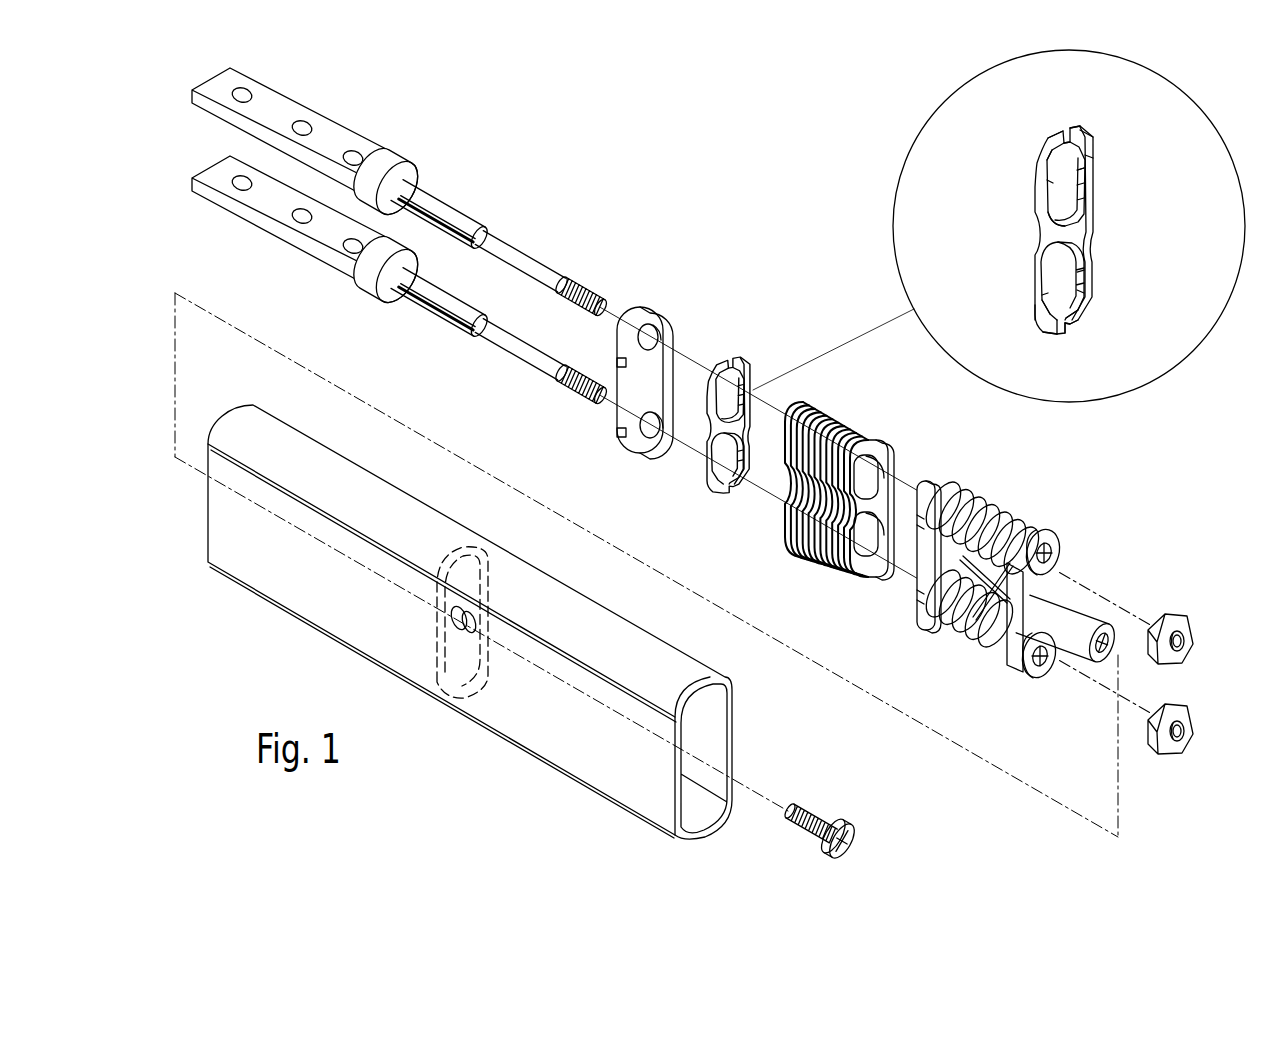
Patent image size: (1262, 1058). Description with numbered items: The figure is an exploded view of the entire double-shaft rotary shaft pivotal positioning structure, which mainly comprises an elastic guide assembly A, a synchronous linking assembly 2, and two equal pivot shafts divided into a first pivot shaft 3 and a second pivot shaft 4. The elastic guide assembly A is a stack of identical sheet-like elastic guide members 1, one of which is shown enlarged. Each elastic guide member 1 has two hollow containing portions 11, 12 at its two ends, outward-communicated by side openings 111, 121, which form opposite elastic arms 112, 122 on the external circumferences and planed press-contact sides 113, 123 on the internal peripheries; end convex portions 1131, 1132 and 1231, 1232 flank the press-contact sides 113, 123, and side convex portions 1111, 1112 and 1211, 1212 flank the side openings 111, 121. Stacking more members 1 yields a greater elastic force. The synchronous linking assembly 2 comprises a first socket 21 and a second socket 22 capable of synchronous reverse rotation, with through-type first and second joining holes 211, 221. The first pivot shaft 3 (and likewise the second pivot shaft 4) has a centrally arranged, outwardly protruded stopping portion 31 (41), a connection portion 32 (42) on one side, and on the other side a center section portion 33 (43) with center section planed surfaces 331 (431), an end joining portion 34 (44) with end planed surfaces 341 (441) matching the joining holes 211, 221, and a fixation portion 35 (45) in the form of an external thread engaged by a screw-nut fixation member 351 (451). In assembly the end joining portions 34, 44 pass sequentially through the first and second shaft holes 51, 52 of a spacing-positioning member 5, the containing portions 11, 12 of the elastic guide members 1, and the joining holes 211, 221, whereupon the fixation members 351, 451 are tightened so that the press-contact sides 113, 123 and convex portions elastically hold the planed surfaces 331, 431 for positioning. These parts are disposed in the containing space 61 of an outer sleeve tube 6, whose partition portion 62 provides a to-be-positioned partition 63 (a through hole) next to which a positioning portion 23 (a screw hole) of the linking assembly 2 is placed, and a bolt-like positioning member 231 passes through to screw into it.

The elastic guide member 1 is at (757, 352).
The containing portion 11 is at (1042, 168).
The side opening 111 is at (1065, 130).
The side convex portion 1111 is at (1055, 140).
The side convex portion 1112 is at (1083, 133).
The elastic arm 112 is at (1092, 157).
The press-contact side 113 is at (1055, 220).
The end convex portion 1131 is at (1092, 137).
The end convex portion 1132 is at (1078, 168).
The containing portion 12 is at (1060, 285).
The side opening 121 is at (1062, 333).
The side convex portion 1211 is at (1052, 337).
The side convex portion 1212 is at (1084, 316).
The elastic arm 122 is at (1036, 313).
The press-contact side 123 is at (1072, 322).
The end convex portion 1231 is at (1086, 303).
The end convex portion 1232 is at (1092, 277).
The synchronous linking assembly 2 is at (999, 492).
The first socket 21 is at (1040, 530).
The first joining hole 211 is at (1052, 555).
The second socket 22 is at (1028, 672).
The second joining hole 221 is at (1048, 672).
The positioning portion 23 is at (1114, 640).
The positioning member 231 is at (818, 813).
The first pivot shaft 3 is at (427, 173).
The stopping portion 31 is at (387, 162).
The connection portion 32 is at (333, 141).
The center section portion 33 is at (458, 220).
The center section planed surface 331 is at (433, 228).
The end joining portion 34 is at (535, 284).
The end planed surface 341 is at (530, 260).
The fixation portion 35 is at (584, 286).
The fixation member 351 is at (1185, 617).
The second pivot shaft 4 is at (371, 308).
The stopping portion 41 is at (373, 258).
The connection portion 42 is at (268, 207).
The center section portion 43 is at (462, 312).
The center section planed surface 431 is at (413, 307).
The end joining portion 44 is at (555, 387).
The end planed surface 441 is at (528, 349).
The fixation portion 45 is at (584, 402).
The fixation member 451 is at (1185, 707).
The spacing-positioning member 5 is at (640, 367).
The first shaft hole 51 is at (648, 324).
The second shaft hole 52 is at (652, 436).
The outer sleeve tube 6 is at (556, 744).
The containing space 61 is at (704, 709).
The partition portion 62 is at (449, 707).
The to-be-positioned partition 63 is at (461, 634).
The elastic guide assembly A is at (673, 498).